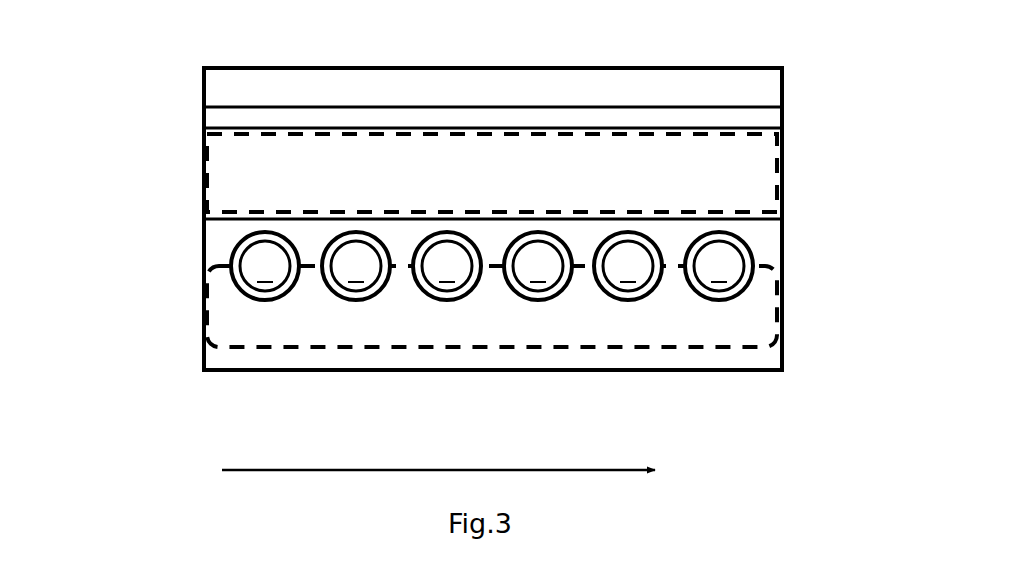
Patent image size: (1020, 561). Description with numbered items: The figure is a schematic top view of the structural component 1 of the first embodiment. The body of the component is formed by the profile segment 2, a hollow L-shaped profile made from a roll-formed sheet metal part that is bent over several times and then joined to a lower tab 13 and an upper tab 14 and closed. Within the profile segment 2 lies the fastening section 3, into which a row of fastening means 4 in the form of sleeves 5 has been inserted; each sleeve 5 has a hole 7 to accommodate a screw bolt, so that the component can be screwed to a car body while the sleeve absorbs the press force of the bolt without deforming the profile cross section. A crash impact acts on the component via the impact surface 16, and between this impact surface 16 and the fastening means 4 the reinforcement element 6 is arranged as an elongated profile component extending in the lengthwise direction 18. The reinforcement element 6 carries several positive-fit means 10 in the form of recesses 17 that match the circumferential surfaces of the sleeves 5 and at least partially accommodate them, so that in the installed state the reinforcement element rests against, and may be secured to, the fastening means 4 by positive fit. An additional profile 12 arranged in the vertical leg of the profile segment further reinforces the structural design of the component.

The structural component 1 is at (150, 30).
The profile segment 2 is at (476, 181).
The fastening section 3 is at (459, 316).
The fastening means 4 is at (499, 337).
The sleeve 5 is at (499, 337).
The reinforcement element 6 is at (499, 337).
The hole 7 is at (262, 298).
The positive-fit means 10 is at (534, 268).
The additional profile 12 is at (740, 168).
The lower tab 13 is at (217, 115).
The upper tab 14 is at (230, 98).
The impact surface 16 is at (707, 407).
The recess 17 is at (755, 278).
The lengthwise direction 18 is at (620, 471).